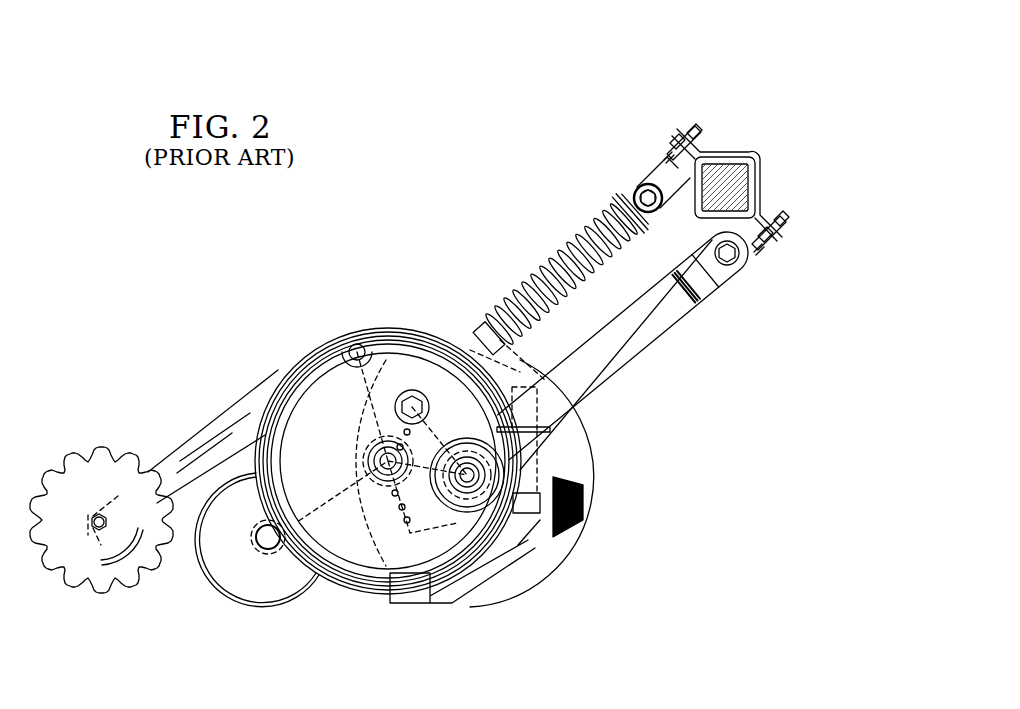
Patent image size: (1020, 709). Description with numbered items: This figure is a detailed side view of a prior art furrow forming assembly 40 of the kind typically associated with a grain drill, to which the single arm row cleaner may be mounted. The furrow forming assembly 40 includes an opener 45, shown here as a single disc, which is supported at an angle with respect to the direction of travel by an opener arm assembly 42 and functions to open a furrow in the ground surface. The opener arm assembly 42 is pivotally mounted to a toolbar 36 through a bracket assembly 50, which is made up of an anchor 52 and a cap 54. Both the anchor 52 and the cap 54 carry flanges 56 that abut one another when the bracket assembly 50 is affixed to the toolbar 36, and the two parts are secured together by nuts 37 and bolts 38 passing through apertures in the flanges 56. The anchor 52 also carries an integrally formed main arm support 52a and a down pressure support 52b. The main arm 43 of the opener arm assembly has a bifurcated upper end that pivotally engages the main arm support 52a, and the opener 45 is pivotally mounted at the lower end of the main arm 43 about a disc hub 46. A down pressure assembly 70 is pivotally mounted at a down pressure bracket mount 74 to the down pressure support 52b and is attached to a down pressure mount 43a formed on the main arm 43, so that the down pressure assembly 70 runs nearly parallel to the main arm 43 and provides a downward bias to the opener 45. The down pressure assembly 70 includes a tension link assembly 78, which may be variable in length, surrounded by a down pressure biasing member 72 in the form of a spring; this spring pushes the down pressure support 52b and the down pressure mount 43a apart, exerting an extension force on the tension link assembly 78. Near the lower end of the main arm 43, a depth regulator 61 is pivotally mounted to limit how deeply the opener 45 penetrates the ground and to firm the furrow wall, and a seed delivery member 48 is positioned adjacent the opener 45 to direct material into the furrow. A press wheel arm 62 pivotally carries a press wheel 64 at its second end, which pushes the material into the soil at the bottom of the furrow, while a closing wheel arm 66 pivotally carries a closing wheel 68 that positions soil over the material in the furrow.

The toolbar 36 is at (752, 195).
The nuts 37 is at (660, 170).
The bolts 38 is at (658, 133).
The furrow forming assembly 40 is at (444, 291).
The opener arm assembly 42 is at (790, 441).
The main arm 43 is at (663, 320).
The down pressure mount 43a is at (563, 357).
The opener 45 is at (598, 473).
The disc hub 46 is at (472, 503).
The seed delivery member 48 is at (512, 543).
The bracket assembly 50 is at (781, 72).
The anchor 52 is at (687, 212).
The main arm support 52a is at (765, 245).
The down pressure support 52b is at (645, 145).
The cap 54 is at (775, 163).
The flanges 56 is at (672, 132).
The depth regulator 61 is at (352, 593).
The press wheel arm 62 is at (310, 475).
The press wheel 64 is at (248, 580).
The closing wheel arm 66 is at (176, 455).
The closing wheel 68 is at (83, 594).
The down pressure assembly 70 is at (534, 183).
The down pressure biasing member 72 is at (498, 332).
The down pressure bracket mount 74 is at (640, 187).
The tension link assembly 78 is at (560, 270).